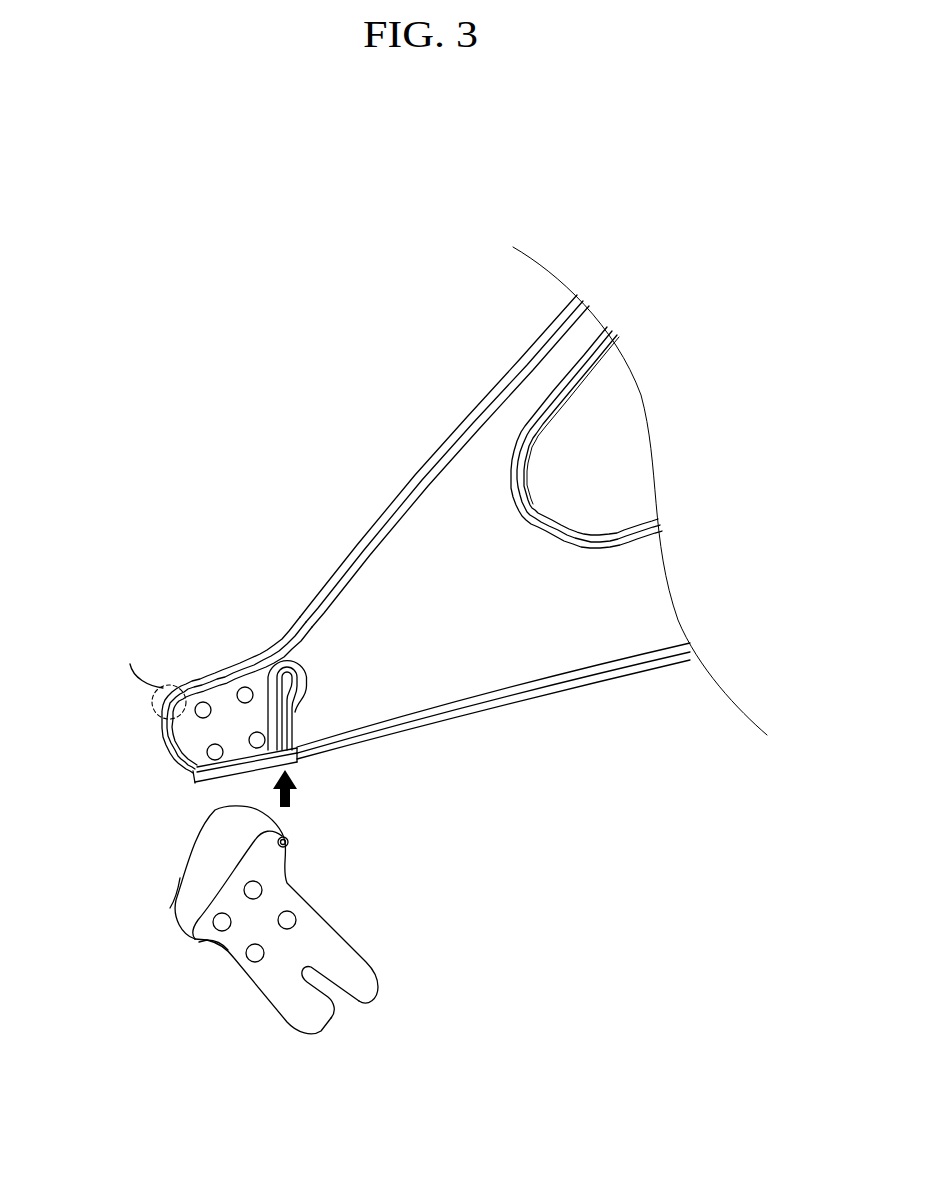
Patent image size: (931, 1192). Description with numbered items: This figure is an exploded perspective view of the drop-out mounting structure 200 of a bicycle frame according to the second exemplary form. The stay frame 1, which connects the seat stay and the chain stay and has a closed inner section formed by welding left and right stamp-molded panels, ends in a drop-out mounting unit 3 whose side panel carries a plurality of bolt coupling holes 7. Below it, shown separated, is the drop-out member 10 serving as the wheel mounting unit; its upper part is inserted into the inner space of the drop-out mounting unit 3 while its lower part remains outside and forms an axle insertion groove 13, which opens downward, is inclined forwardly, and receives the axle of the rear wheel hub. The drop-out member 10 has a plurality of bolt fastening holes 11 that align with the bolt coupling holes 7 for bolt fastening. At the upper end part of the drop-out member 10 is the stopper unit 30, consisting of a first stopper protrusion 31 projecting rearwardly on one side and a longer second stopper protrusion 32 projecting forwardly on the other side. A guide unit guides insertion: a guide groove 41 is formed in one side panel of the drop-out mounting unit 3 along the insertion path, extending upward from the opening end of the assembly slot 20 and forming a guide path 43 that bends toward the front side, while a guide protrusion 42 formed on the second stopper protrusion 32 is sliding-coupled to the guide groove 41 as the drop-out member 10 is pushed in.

The drop-out mounting structure 200 is at (347, 257).
The stay frame 1 is at (449, 398).
The drop-out mounting unit 3 is at (145, 741).
The bolt coupling holes 7 is at (254, 692).
The assembly slot 20 is at (222, 782).
The guide groove 41 is at (283, 716).
The guide path 43 is at (304, 702).
The drop-out member 10 is at (355, 908).
The bolt fastening holes 11 is at (229, 930).
The axle insertion groove 13 is at (337, 1007).
The guide protrusion 42 is at (290, 842).
The stopper unit 30 is at (93, 916).
The first stopper protrusion 31 is at (199, 942).
The second stopper protrusion 32 is at (170, 908).